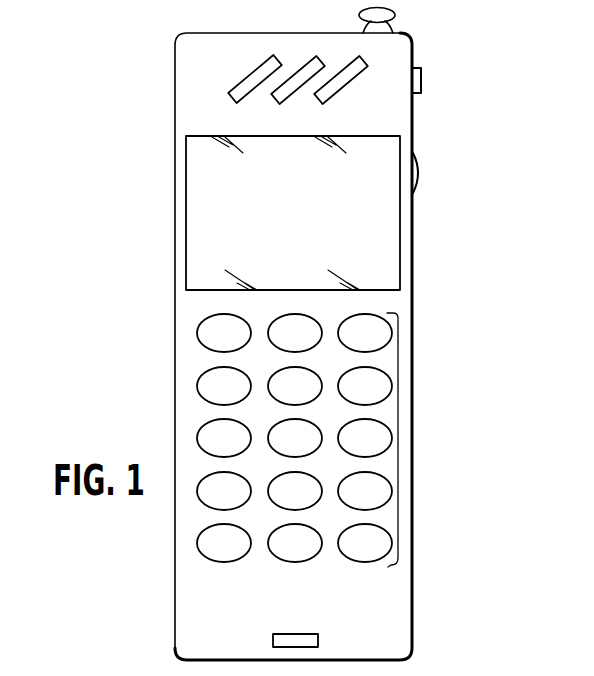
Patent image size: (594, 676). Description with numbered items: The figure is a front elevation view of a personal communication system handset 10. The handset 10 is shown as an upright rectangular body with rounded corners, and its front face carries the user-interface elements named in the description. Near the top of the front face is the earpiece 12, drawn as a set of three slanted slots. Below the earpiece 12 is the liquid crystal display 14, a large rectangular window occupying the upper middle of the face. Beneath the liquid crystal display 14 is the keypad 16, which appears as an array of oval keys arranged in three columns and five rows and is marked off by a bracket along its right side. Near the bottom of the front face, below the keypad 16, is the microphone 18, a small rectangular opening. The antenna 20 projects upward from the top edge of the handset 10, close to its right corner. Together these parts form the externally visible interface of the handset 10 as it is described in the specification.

The personal communication system handset 10 is at (175, 150).
The earpiece 12 is at (252, 72).
The liquid crystal display 14 is at (392, 228).
The keypad 16 is at (398, 437).
The microphone 18 is at (318, 641).
The antenna 20 is at (395, 13).